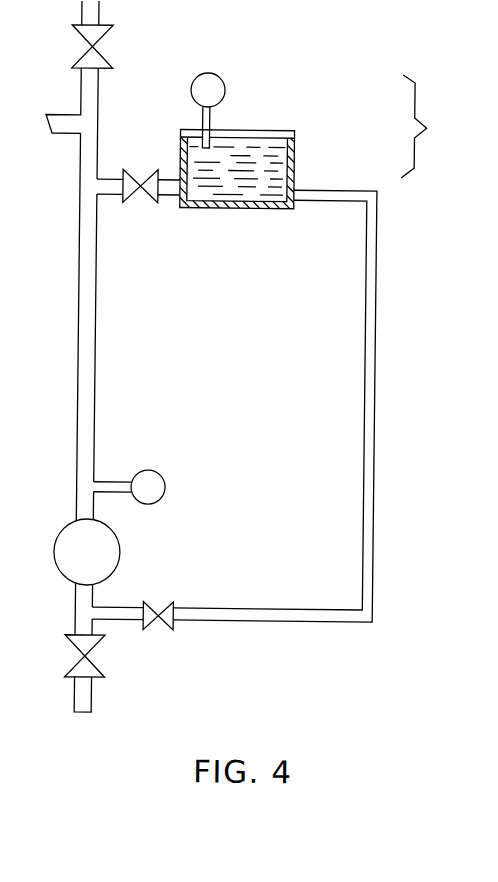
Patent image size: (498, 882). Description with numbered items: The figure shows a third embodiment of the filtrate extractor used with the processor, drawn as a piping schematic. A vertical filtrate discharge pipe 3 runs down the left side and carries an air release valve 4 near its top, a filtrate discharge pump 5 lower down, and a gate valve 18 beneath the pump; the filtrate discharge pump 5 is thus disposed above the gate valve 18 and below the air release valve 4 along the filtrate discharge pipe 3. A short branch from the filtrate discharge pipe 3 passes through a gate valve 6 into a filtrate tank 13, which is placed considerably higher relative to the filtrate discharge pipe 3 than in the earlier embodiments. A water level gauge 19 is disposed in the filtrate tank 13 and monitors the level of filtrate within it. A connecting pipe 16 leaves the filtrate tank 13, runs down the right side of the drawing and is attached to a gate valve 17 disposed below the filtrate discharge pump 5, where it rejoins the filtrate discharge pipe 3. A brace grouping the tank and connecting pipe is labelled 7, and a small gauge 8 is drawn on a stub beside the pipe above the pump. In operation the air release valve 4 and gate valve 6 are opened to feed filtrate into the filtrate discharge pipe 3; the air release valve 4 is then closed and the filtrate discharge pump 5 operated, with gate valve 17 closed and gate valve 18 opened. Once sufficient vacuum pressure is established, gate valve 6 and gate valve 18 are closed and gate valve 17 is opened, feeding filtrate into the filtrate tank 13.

The filtrate discharge pipe 3 is at (82, 371).
The air release valve 4 is at (111, 57).
The filtrate discharge pump 5 is at (126, 545).
The gate valve 6 is at (152, 176).
The reservoir assembly 7 is at (275, 321).
The pressure gauge 8 is at (168, 473).
The filtrate tank 13 is at (296, 135).
The connecting pipe 16 is at (352, 184).
The gate valve 17 is at (167, 598).
The gate valve 18 is at (104, 643).
The water level gauge 19 is at (216, 71).